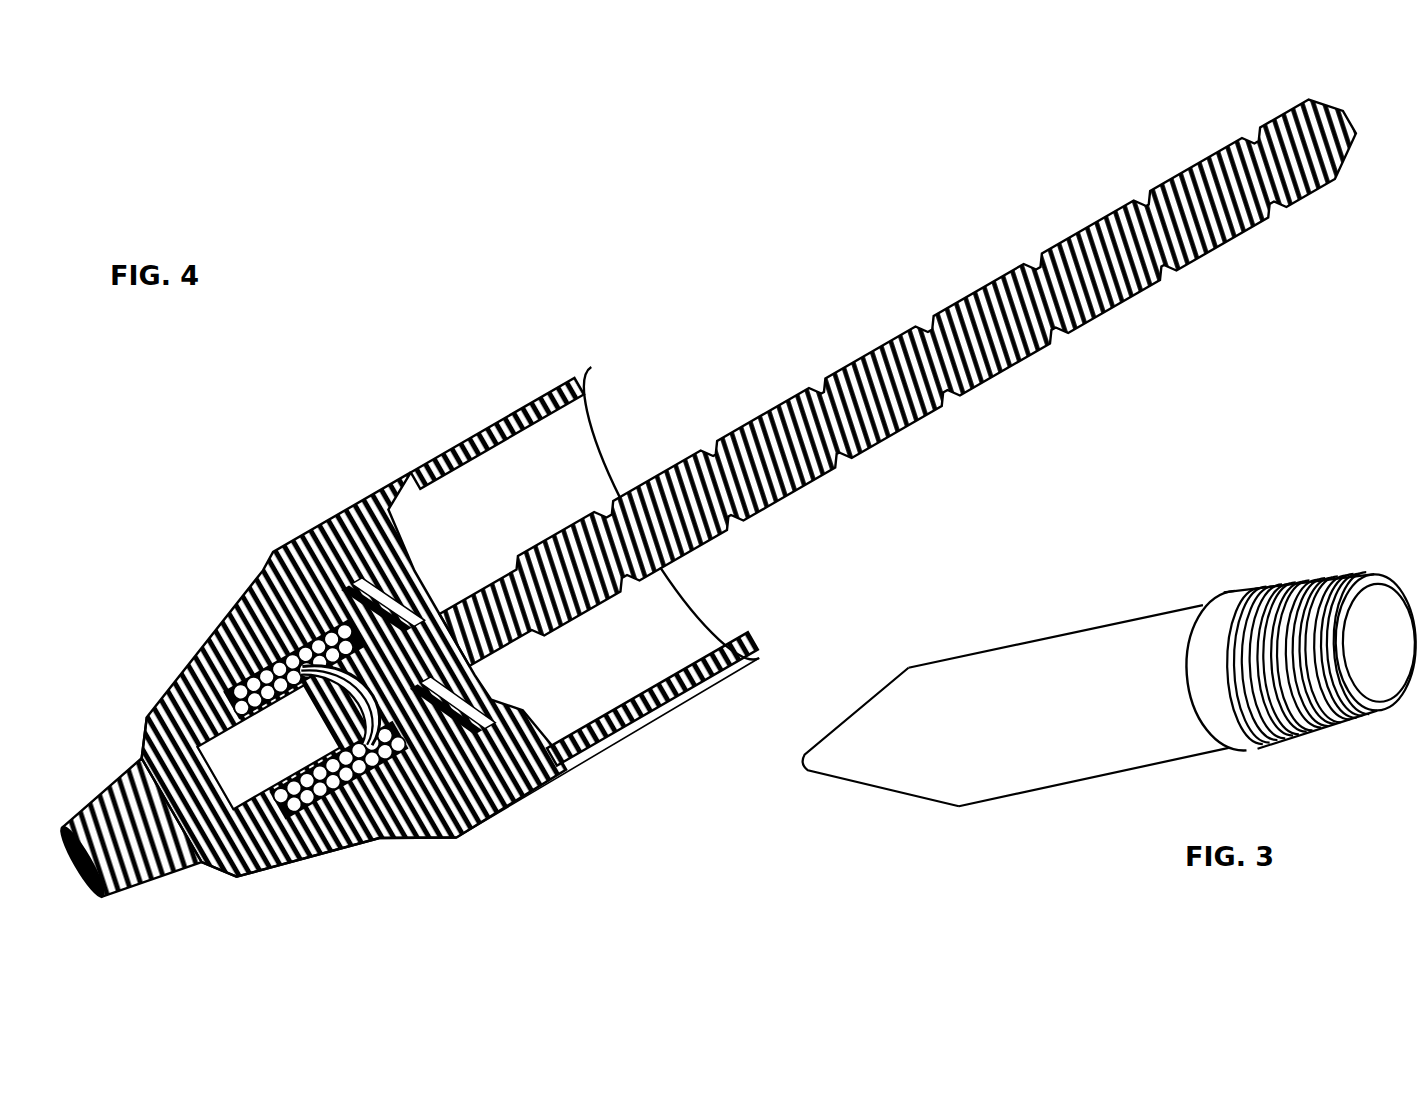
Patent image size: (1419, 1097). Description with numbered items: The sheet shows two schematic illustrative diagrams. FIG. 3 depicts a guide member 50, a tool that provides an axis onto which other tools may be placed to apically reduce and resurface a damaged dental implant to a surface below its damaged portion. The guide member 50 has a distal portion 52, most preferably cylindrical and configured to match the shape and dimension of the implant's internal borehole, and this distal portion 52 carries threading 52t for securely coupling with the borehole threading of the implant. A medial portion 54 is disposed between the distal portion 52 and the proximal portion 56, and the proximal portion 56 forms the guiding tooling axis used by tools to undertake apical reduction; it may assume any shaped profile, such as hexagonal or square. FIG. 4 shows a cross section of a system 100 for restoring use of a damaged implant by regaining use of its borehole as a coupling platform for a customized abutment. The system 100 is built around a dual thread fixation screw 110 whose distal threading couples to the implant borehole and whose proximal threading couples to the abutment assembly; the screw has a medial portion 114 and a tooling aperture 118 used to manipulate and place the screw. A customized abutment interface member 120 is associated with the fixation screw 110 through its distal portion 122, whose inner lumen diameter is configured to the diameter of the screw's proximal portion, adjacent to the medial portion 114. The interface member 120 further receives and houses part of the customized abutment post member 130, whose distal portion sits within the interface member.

In FIG. 4, the system 100 is at (305, 480).
In FIG. 4, the dual thread fixation screw 110 is at (83, 807).
In FIG. 4, the medial portion 114 is at (143, 767).
In FIG. 4, the tooling aperture 118 is at (230, 760).
In FIG. 4, the customized abutment interface member 120 is at (520, 403).
In FIG. 4, the distal portion 122 is at (280, 850).
In FIG. 4, the customized abutment post member 130 is at (1023, 270).
In FIG. 3, the guide member 50 is at (950, 570).
In FIG. 3, the distal portion 52 is at (1272, 540).
In FIG. 3, the threading 52t is at (1298, 592).
In FIG. 3, the medial portion 54 is at (1227, 605).
In FIG. 3, the proximal portion 56 is at (1047, 642).